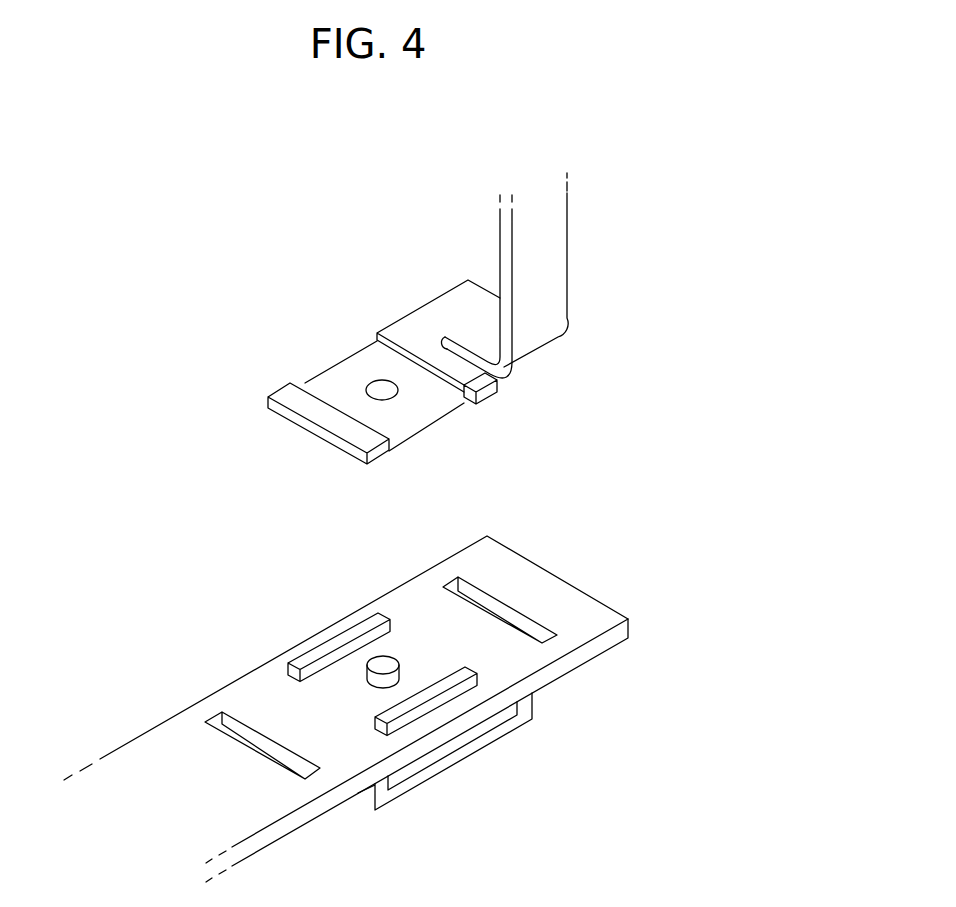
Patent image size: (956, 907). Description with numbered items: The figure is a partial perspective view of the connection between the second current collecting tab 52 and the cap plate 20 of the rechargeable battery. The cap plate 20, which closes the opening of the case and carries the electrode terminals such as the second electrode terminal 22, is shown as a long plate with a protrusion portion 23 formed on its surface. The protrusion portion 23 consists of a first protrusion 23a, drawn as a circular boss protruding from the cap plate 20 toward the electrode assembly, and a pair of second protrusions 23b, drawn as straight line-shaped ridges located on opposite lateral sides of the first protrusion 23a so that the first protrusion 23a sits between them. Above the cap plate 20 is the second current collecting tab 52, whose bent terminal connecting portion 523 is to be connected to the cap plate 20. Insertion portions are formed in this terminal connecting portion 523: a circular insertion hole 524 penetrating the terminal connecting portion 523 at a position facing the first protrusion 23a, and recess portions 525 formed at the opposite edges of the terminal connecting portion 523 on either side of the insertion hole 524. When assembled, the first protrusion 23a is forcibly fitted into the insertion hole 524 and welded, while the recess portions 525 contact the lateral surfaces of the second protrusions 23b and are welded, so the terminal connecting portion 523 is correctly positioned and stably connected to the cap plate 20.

The cap plate 20 is at (352, 692).
The second electrode terminal 22 is at (493, 737).
The protrusion portion 23 is at (386, 668).
The first protrusion 23a is at (383, 663).
The second protrusions 23b is at (327, 648).
The second current collecting tab 52 is at (590, 253).
The terminal connecting portion 523 is at (395, 361).
The insertion hole 524 is at (378, 390).
The recess portions 525 is at (438, 407).